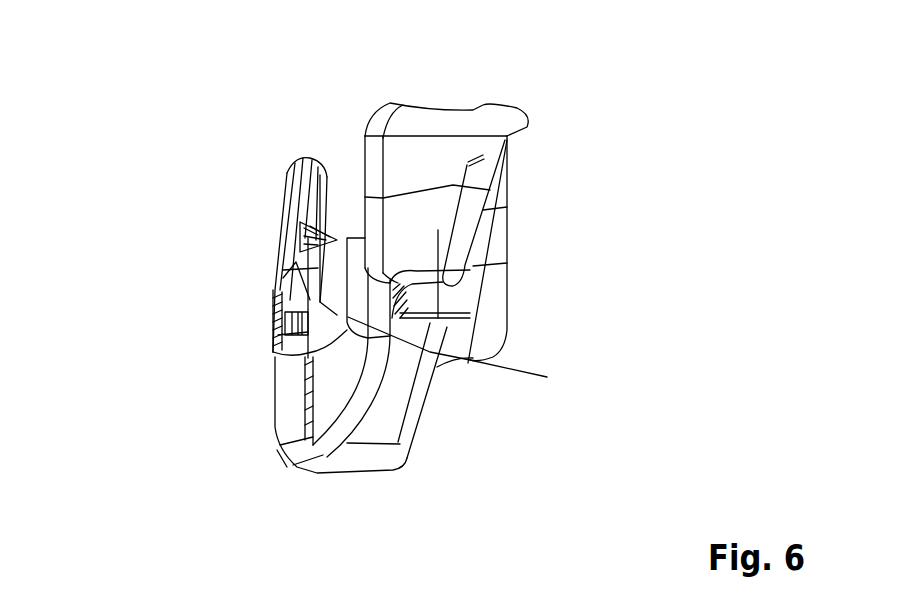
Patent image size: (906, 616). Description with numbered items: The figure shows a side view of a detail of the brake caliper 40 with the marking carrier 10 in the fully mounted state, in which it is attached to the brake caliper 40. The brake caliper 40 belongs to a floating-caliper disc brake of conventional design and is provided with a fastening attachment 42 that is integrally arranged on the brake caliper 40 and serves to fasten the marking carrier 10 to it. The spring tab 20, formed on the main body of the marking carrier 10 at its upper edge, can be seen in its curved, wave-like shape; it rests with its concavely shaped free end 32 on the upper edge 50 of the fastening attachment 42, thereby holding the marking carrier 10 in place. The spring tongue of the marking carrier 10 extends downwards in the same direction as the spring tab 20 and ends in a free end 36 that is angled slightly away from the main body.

The marking carrier 10 is at (407, 237).
The spring tab 20 is at (219, 211).
The free end 32 is at (300, 232).
The free end 36 is at (547, 377).
The brake caliper 40 is at (507, 143).
The fastening attachment 42 is at (270, 303).
The upper edge 50 is at (283, 278).